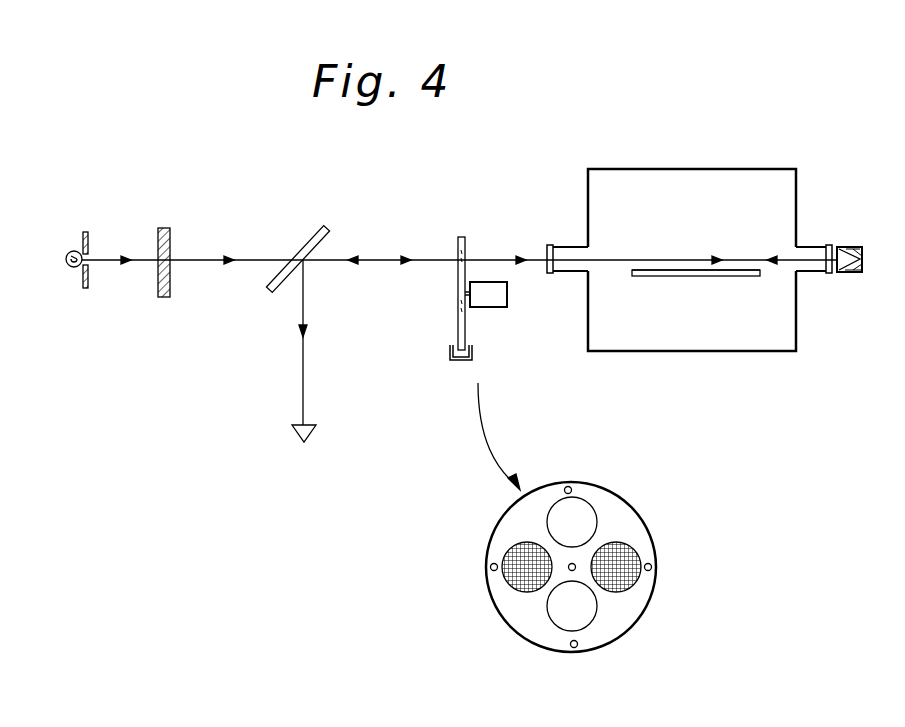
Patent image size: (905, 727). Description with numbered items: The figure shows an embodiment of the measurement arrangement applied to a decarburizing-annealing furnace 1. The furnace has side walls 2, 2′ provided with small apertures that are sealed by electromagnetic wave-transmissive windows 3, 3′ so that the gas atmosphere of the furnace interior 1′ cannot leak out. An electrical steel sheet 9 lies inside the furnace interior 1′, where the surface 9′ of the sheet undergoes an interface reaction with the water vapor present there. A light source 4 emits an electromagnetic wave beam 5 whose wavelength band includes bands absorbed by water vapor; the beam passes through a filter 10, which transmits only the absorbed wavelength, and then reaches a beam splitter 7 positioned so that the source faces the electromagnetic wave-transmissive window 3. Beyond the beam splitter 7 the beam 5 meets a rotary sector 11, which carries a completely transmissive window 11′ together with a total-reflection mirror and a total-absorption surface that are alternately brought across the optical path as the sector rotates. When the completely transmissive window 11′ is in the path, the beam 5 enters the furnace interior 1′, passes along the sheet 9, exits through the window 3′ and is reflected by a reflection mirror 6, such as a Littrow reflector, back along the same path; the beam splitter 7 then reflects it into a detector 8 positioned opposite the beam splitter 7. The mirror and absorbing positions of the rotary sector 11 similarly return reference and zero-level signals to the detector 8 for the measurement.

The decarburizing-annealing furnace 1 is at (738, 172).
The furnace interior 1′ is at (648, 182).
The side wall 2 is at (560, 272).
The side wall 2′ is at (814, 272).
The electromagnetic wave-transmissive window 3 is at (546, 248).
The electromagnetic wave-transmissive window 3′ is at (828, 246).
The light source 4 is at (68, 266).
The electromagnetic wave beam 5 is at (378, 258).
The reflection mirror 6 is at (860, 247).
The beam splitter 7 is at (316, 234).
The detector 8 is at (312, 438).
The electrical steel sheet 9 is at (697, 278).
The surface of the sheet 9′ is at (652, 268).
The filter 10 is at (162, 298).
The rotary sector 11 is at (464, 238).
The completely transmissive window 11′ is at (583, 514).